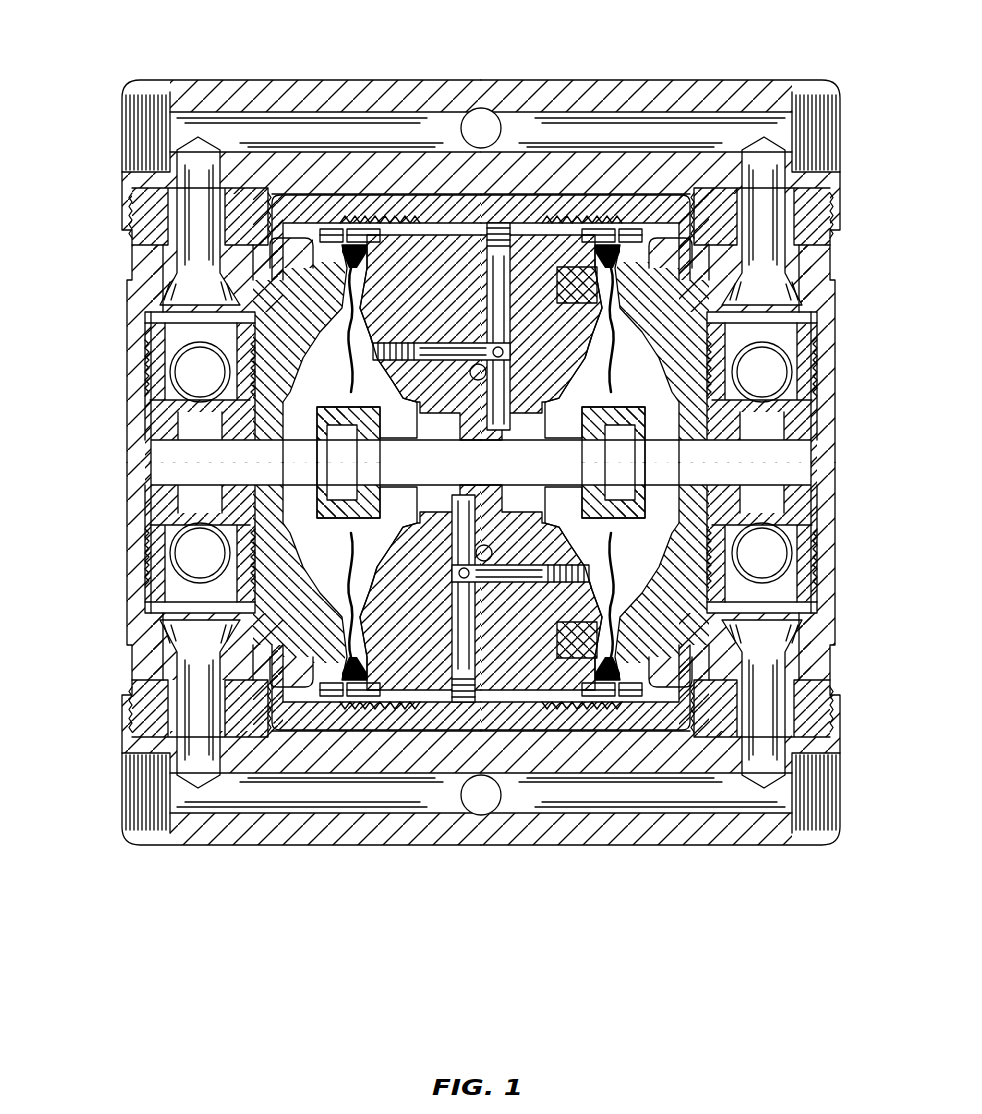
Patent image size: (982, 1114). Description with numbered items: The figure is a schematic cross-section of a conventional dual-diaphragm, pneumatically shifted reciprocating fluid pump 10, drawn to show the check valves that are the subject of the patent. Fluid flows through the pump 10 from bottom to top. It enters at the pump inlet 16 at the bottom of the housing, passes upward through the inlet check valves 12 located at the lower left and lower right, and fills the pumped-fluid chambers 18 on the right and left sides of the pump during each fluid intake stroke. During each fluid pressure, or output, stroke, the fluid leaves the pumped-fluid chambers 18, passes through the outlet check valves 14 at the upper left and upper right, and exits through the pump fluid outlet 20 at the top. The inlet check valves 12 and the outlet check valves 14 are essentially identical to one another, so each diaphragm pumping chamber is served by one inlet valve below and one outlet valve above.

The fluid pump 10 is at (469, 466).
The inlet check valves 12 is at (150, 574).
The outlet check valves 14 is at (150, 381).
The pump inlet 16 is at (482, 816).
The pumped-fluid chambers 18 is at (343, 395).
The pump fluid outlet 20 is at (478, 108).